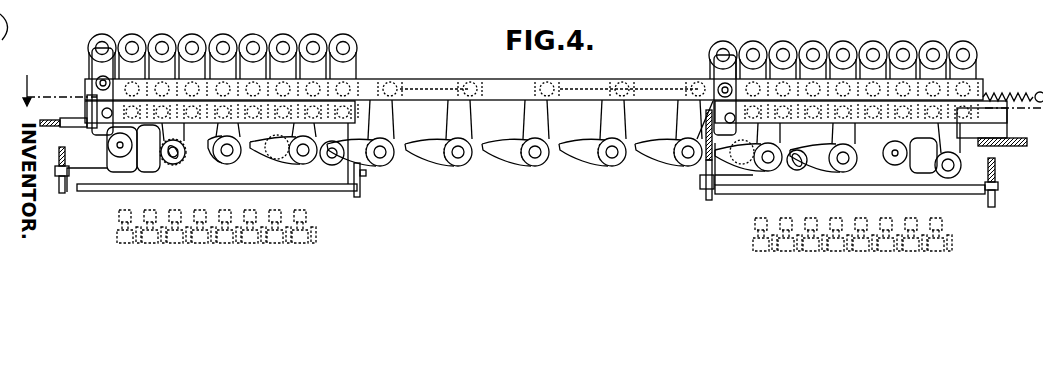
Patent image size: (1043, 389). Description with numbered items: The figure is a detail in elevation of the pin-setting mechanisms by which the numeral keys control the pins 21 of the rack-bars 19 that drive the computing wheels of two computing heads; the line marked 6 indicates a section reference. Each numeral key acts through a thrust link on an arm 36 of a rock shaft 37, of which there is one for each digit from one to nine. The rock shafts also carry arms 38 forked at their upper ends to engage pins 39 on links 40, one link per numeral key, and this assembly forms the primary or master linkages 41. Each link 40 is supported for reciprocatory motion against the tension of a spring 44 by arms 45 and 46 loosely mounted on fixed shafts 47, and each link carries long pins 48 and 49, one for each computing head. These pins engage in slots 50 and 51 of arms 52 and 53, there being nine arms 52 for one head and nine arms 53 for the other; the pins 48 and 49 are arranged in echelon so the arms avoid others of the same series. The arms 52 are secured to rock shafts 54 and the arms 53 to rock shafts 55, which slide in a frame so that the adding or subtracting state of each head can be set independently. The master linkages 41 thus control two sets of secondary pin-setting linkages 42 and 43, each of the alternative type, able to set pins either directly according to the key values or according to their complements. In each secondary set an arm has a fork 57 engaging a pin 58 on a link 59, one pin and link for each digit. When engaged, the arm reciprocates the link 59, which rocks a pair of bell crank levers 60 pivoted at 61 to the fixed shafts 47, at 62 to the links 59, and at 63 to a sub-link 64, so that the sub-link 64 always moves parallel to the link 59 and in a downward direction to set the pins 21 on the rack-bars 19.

The section line 6 is at (60, 90).
The rack-bar 19 is at (313, 238).
The pins 21 is at (254, 211).
The arm 36 is at (508, 158).
The rock shaft 37 is at (615, 157).
The arm 38 is at (518, 122).
The pin 39 is at (435, 90).
The link 40 is at (495, 80).
The primary or master linkages 41 is at (573, 80).
The secondary pin-setting linkage 42 is at (95, 186).
The secondary pin-setting linkage 43 is at (975, 200).
The spring 44 is at (1013, 90).
The arm 45 is at (146, 148).
The arm 46 is at (961, 152).
The fixed shaft 47 is at (170, 160).
The long pin 48 is at (98, 83).
The long pin 49 is at (713, 105).
The slot 50 is at (97, 75).
The slot 51 is at (720, 88).
The arm 52 is at (99, 37).
The arm 53 is at (725, 43).
The rock shaft 54 is at (163, 37).
The rock shaft 55 is at (785, 45).
The fork 57 is at (100, 116).
The pin 58 is at (93, 123).
The link 59 is at (47, 115).
The bell crank lever 60 is at (122, 152).
The pivot 61 is at (176, 162).
The pivot 62 is at (173, 142).
The pivot 63 is at (116, 146).
The sub-link 64 is at (75, 182).